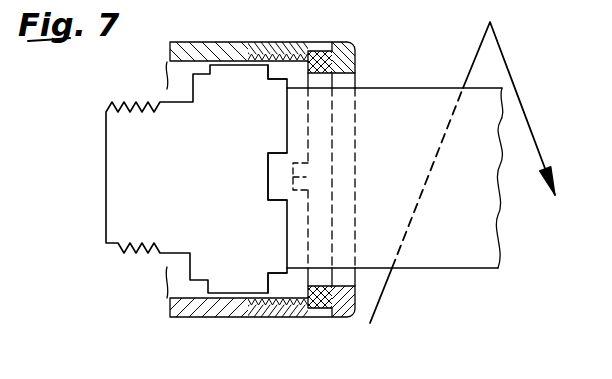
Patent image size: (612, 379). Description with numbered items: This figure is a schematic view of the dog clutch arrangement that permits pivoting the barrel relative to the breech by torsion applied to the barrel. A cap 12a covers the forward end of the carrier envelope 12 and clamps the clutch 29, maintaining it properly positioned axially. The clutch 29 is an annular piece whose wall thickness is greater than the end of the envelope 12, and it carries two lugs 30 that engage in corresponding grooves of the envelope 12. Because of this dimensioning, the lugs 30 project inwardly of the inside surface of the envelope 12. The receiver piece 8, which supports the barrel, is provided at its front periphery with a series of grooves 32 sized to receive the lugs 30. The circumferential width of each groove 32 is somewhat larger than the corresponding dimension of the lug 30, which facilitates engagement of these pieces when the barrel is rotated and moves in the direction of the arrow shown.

The receiver piece 8 is at (137, 212).
The envelope 12 is at (187, 50).
The cap 12a is at (345, 62).
The clutch 29 is at (318, 310).
The lugs 30 is at (300, 178).
The grooves 32 is at (292, 65).